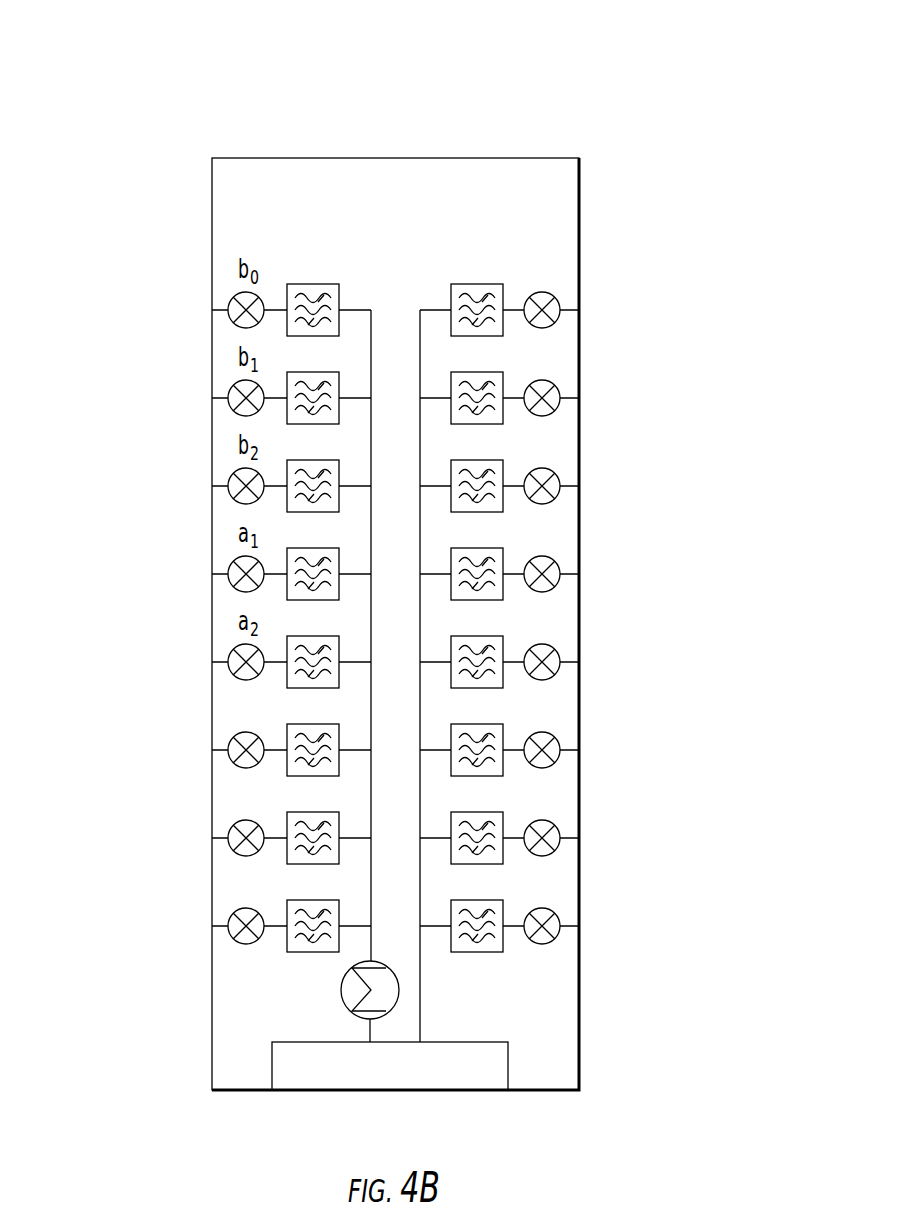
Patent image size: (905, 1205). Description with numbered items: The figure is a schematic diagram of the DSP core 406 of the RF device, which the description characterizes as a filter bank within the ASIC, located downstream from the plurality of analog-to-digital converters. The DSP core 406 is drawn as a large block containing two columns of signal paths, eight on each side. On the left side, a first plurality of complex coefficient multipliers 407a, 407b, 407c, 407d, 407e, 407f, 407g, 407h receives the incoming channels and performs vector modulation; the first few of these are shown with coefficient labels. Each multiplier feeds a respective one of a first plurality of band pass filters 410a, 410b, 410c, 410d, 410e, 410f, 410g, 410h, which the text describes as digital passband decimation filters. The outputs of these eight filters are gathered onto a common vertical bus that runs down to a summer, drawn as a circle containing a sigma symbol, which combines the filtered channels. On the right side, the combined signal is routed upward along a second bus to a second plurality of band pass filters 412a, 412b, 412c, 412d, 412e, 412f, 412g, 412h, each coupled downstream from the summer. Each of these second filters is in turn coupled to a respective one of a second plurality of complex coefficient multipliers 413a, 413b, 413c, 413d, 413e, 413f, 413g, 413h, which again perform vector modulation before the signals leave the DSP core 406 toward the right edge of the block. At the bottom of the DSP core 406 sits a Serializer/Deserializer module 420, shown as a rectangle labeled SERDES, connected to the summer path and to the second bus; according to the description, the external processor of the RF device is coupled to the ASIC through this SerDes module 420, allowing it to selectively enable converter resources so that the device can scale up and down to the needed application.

The DSP core 406 is at (715, 118).
The complex coefficient multiplier 407a is at (177, 302).
The complex coefficient multiplier 407b is at (177, 390).
The complex coefficient multiplier 407c is at (177, 478).
The complex coefficient multiplier 407d is at (177, 566).
The complex coefficient multiplier 407e is at (177, 654).
The complex coefficient multiplier 407f is at (177, 742).
The complex coefficient multiplier 407g is at (177, 830).
The complex coefficient multiplier 407h is at (177, 918).
The band pass filter 410a is at (239, 316).
The band pass filter 410b is at (239, 404).
The band pass filter 410c is at (239, 492).
The band pass filter 410d is at (239, 580).
The band pass filter 410e is at (239, 668).
The band pass filter 410f is at (239, 756).
The band pass filter 410g is at (239, 844).
The band pass filter 410h is at (239, 932).
The band pass filter 412a is at (550, 323).
The band pass filter 412b is at (550, 411).
The band pass filter 412c is at (550, 499).
The band pass filter 412d is at (550, 587).
The band pass filter 412e is at (550, 675).
The band pass filter 412f is at (550, 763).
The band pass filter 412g is at (550, 851).
The band pass filter 412h is at (550, 939).
The complex coefficient multiplier 413a is at (612, 301).
The complex coefficient multiplier 413b is at (612, 389).
The complex coefficient multiplier 413c is at (612, 477).
The complex coefficient multiplier 413d is at (612, 565).
The complex coefficient multiplier 413e is at (612, 653).
The complex coefficient multiplier 413f is at (612, 741).
The complex coefficient multiplier 413g is at (612, 829).
The complex coefficient multiplier 413h is at (612, 917).
The Serializer/Deserializer (SerDes) module 420 is at (510, 1073).